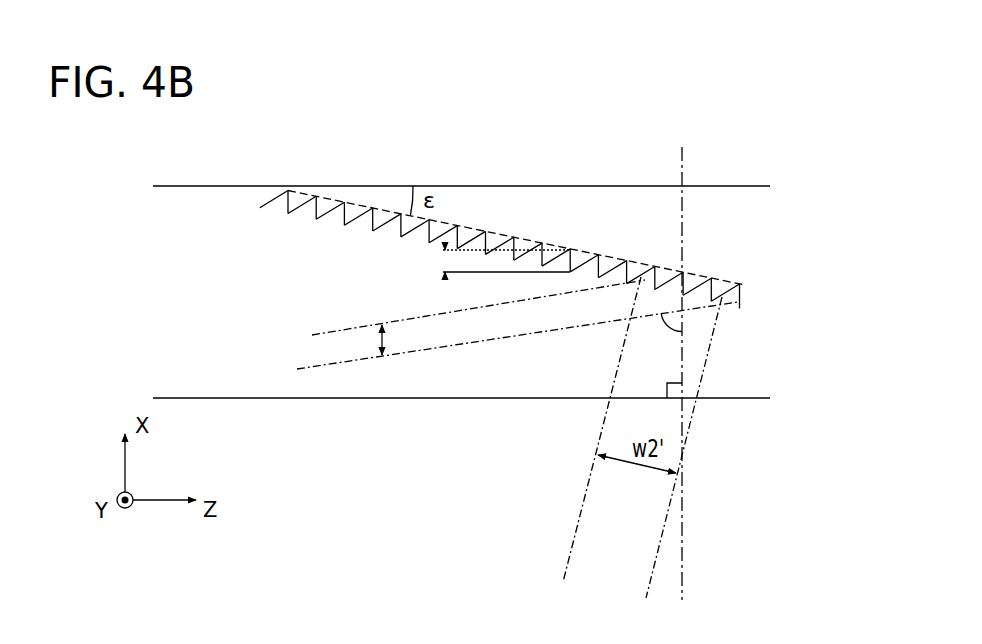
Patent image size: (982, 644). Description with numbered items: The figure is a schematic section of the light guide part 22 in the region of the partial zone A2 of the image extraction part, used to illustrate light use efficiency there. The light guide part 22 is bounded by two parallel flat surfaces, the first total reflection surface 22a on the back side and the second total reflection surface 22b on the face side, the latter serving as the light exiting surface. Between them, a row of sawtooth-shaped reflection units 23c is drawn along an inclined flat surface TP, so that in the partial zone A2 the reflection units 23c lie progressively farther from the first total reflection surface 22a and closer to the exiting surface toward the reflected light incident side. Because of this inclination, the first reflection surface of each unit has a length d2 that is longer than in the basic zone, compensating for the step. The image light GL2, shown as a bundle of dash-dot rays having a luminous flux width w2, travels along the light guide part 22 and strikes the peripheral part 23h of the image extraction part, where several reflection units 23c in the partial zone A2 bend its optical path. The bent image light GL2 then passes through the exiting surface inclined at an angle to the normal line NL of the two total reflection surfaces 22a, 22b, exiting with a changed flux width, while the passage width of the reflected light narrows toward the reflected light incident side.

The light guide part 22 is at (461, 285).
The first total reflection surface 22a is at (342, 186).
The second total reflection surface 22b is at (282, 400).
The reflection unit 23c is at (670, 283).
The peripheral part 23h is at (705, 266).
The inclined flat surface TP is at (572, 249).
The partial zone A2 is at (498, 216).
The length of the first reflection surface d2 is at (491, 261).
The image light GL2 is at (467, 345).
The luminous flux width w2 is at (362, 342).
The normal line NL is at (683, 547).